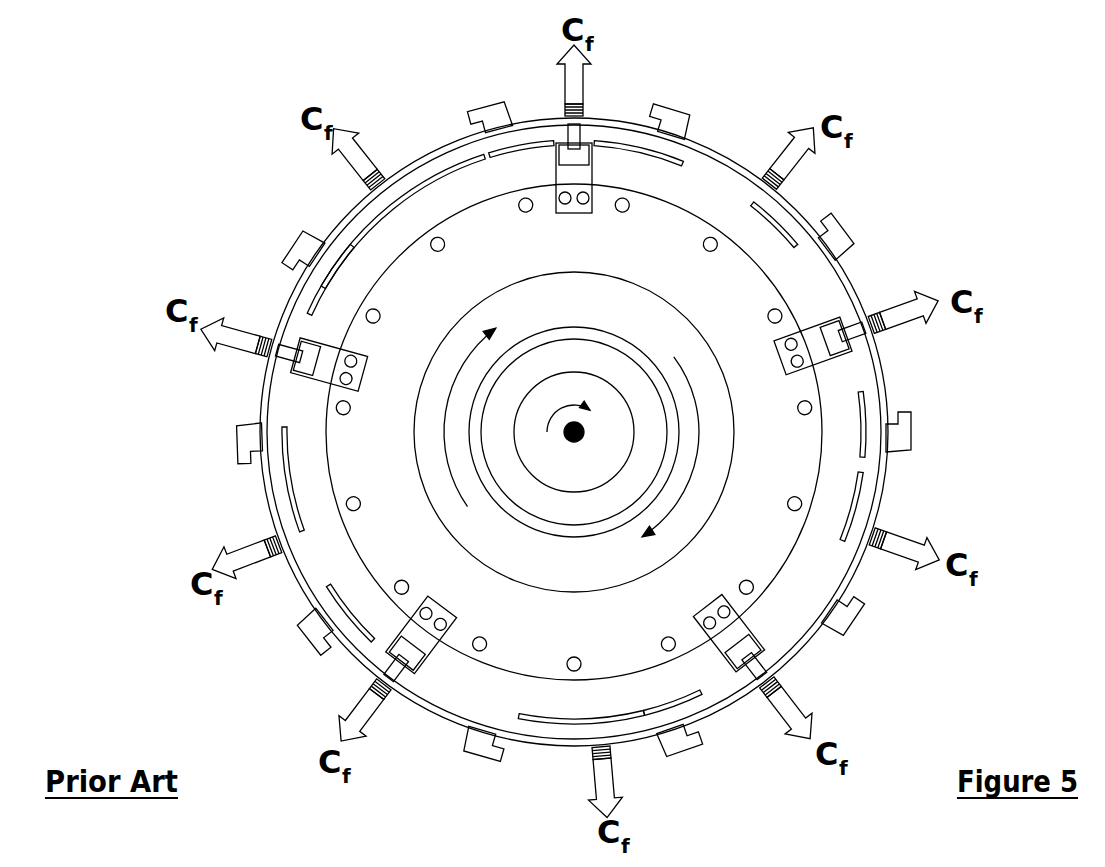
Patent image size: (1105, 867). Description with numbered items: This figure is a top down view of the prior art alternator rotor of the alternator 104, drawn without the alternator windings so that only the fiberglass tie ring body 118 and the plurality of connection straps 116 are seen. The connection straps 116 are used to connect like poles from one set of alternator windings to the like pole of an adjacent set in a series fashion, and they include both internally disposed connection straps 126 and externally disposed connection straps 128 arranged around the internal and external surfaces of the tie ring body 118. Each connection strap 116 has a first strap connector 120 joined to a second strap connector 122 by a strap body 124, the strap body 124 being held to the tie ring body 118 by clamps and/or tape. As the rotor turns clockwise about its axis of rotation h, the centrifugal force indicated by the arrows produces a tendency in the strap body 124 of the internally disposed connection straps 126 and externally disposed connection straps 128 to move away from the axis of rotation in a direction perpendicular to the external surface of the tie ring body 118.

The alternator 104 is at (708, 382).
The connection straps 116 is at (602, 428).
The tie ring body 118 is at (548, 432).
The first strap connector 120 is at (575, 431).
The second strap connector 122 is at (189, 443).
The strap body 124 is at (482, 406).
The internally disposed connection straps 126 is at (581, 664).
The externally disposed connection straps 128 is at (768, 744).